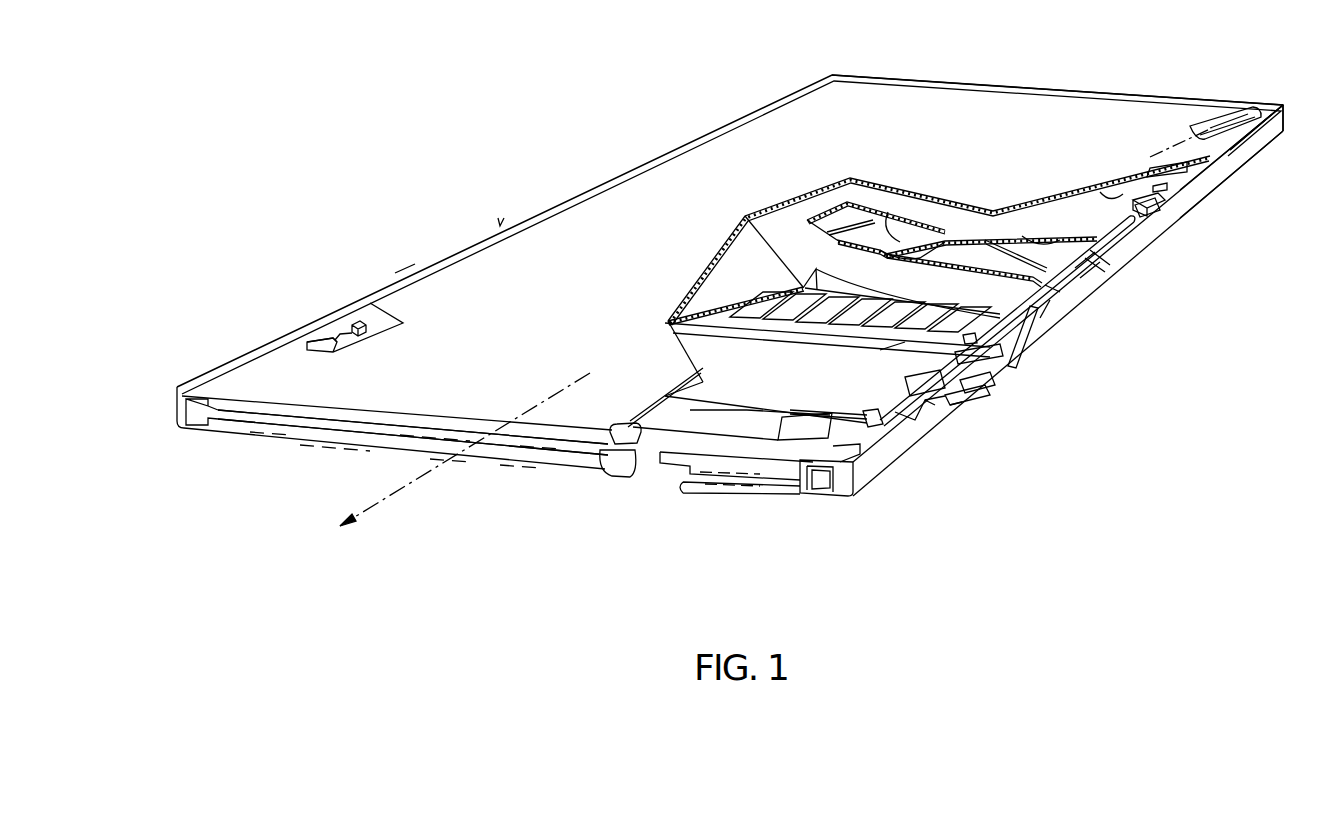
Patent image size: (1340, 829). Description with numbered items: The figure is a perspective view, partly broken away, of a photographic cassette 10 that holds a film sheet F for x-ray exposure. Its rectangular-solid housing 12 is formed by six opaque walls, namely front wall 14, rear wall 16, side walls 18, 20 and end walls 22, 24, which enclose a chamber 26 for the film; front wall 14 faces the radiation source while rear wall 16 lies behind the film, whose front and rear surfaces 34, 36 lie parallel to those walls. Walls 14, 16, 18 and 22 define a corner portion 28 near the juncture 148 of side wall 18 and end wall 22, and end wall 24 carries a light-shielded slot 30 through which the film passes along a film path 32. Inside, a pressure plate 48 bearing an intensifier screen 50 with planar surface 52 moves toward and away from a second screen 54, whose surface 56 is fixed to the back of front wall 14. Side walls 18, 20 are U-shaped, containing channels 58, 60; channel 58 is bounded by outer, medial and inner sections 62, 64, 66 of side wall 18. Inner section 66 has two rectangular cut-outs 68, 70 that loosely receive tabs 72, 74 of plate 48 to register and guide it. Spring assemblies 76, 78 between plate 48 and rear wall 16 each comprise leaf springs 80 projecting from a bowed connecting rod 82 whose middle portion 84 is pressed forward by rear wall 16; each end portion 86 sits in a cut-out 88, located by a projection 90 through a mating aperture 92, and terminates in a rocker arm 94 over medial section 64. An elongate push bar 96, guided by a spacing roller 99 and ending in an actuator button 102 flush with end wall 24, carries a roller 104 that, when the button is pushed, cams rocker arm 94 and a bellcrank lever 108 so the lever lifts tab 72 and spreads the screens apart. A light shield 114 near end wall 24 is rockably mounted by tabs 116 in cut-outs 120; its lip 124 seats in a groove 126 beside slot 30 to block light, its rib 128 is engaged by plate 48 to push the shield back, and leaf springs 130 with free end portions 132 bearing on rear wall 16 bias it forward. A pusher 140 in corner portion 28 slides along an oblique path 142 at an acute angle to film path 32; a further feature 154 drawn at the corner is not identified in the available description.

The photographic cassette 10 is at (500, 224).
The housing 12 is at (648, 171).
The front wall 14 is at (1088, 297).
The rear wall 16 is at (588, 281).
The side wall 18 is at (1207, 180).
The side wall 20 is at (406, 280).
The end wall 22 is at (1023, 84).
The end wall 24 is at (703, 484).
The chamber 26 is at (700, 353).
The corner portion 28 is at (1222, 160).
The slot 30 is at (288, 435).
The film path 32 is at (395, 492).
The front surface 34 is at (888, 226).
The rear surface 36 is at (837, 212).
The film sheet F is at (920, 235).
The pressure plate 48 is at (1050, 227).
The intensifier screen 50 is at (1035, 240).
The planar surface 52 is at (1070, 241).
The screen 54 is at (954, 257).
The planar surface 56 is at (1012, 241).
The channel 58 is at (1135, 238).
The channel 60 is at (352, 325).
The outer section 62 is at (250, 354).
The medial section 64 is at (910, 420).
The inner section 66 is at (318, 350).
The rectangular cut-out 68 is at (923, 378).
The rectangular cut-out 70 is at (1150, 207).
The tab 72 is at (930, 405).
The tab 74 is at (1140, 215).
The spring assembly 76 is at (745, 342).
The spring assembly 78 is at (1150, 172).
The leaf springs 80 is at (834, 284).
The connecting rod 82 is at (830, 340).
The middle portion 84 is at (787, 333).
The end portion 86 is at (893, 348).
The cut-out 88 is at (967, 335).
The projection 90 is at (1013, 355).
The aperture 92 is at (967, 338).
The rocker arm 94 is at (982, 381).
The push bar 96 is at (1040, 320).
The spacing and guiding roller 99 is at (1100, 267).
The actuator button 102 is at (833, 482).
The roller 104 is at (985, 393).
The bellcrank lever 108 is at (957, 407).
The light shield 114 is at (706, 416).
The tab 116 is at (865, 417).
The cut-out 120 is at (870, 424).
The lip 124 is at (668, 468).
The groove 126 is at (597, 478).
The rib 128 is at (728, 416).
The leaf springs 130 is at (802, 427).
The free end portion 132 is at (753, 442).
The pusher 140 is at (1237, 122).
The oblique rectilinear path 142 is at (1163, 147).
The juncture 148 is at (1290, 118).
The corner tab 154 is at (1208, 124).